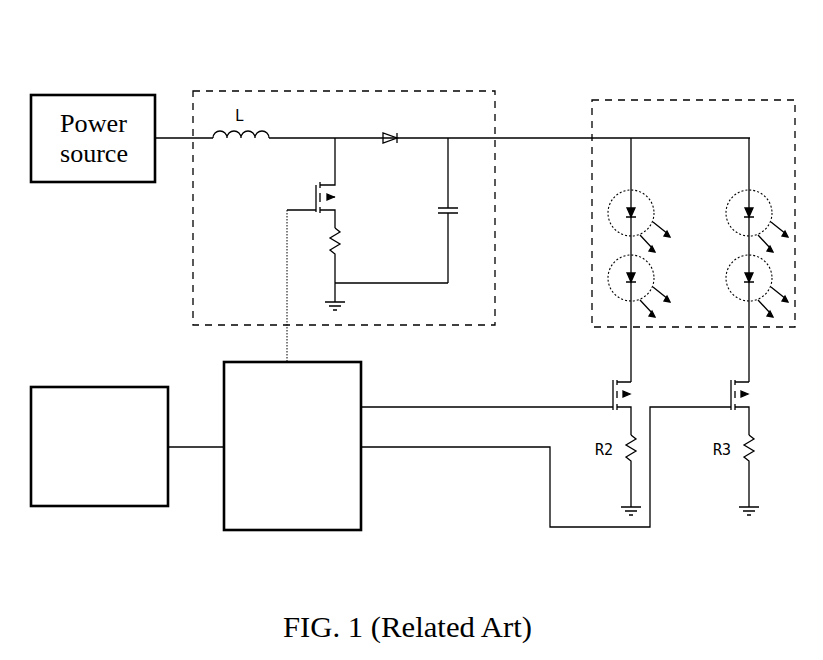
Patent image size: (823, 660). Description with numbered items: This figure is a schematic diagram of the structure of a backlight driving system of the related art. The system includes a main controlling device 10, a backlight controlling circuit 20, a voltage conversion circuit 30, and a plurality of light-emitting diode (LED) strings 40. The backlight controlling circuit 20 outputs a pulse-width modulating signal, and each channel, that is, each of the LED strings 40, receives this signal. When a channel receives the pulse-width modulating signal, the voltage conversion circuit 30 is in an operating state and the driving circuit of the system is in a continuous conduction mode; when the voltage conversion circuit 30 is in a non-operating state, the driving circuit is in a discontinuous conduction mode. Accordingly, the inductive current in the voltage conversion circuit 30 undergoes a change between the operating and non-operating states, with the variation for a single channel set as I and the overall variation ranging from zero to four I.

The main controlling device 10 is at (110, 385).
The backlight controlling circuit 20 is at (285, 531).
The voltage conversion circuit 30 is at (342, 90).
The light-emitting diode (LED) strings 40 is at (693, 98).